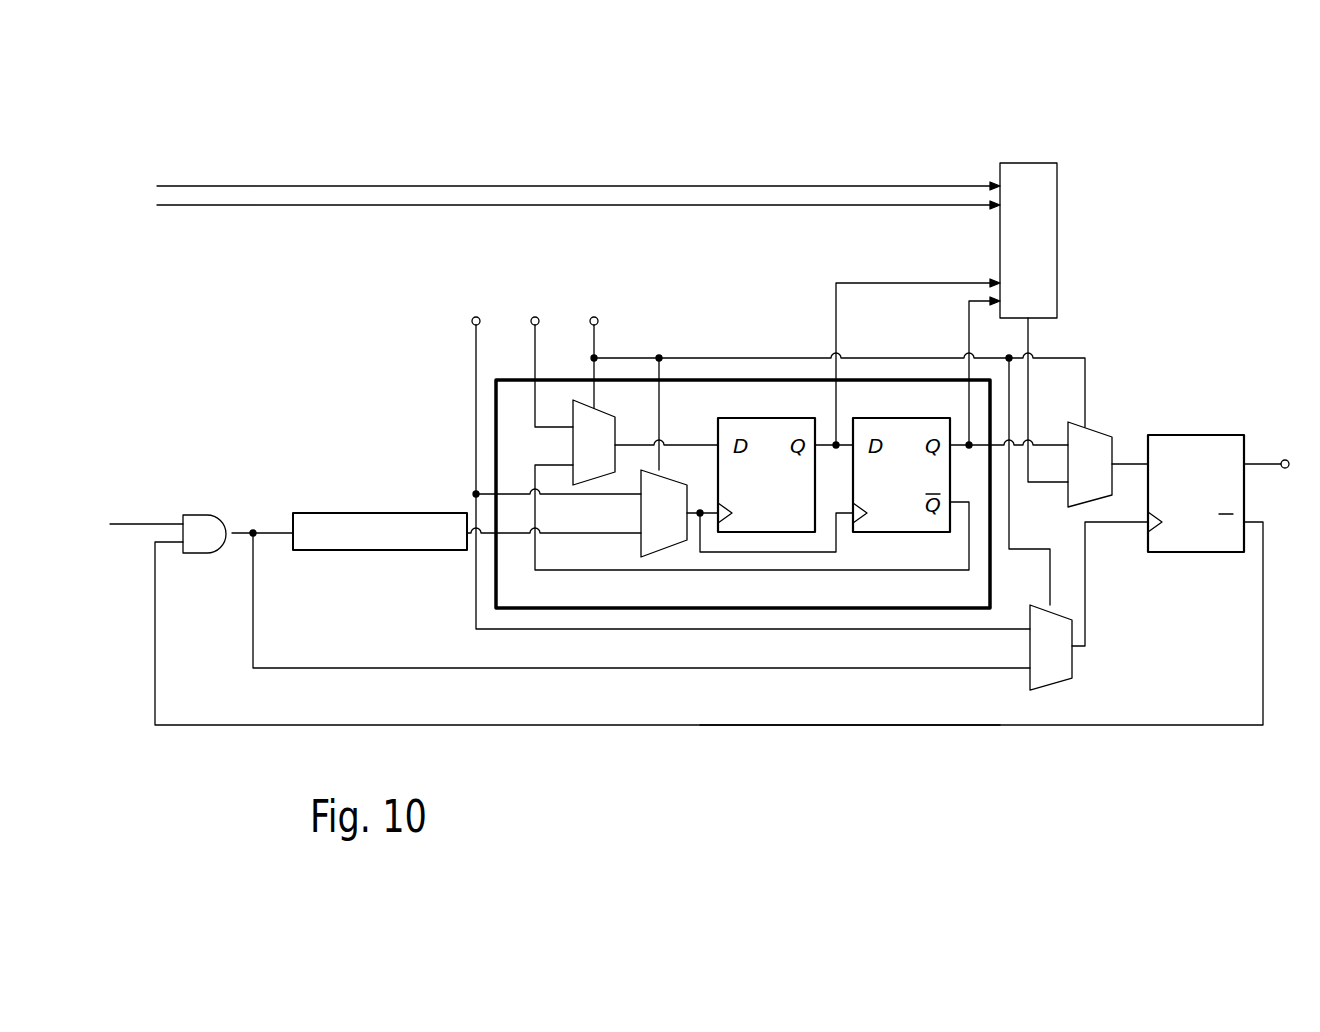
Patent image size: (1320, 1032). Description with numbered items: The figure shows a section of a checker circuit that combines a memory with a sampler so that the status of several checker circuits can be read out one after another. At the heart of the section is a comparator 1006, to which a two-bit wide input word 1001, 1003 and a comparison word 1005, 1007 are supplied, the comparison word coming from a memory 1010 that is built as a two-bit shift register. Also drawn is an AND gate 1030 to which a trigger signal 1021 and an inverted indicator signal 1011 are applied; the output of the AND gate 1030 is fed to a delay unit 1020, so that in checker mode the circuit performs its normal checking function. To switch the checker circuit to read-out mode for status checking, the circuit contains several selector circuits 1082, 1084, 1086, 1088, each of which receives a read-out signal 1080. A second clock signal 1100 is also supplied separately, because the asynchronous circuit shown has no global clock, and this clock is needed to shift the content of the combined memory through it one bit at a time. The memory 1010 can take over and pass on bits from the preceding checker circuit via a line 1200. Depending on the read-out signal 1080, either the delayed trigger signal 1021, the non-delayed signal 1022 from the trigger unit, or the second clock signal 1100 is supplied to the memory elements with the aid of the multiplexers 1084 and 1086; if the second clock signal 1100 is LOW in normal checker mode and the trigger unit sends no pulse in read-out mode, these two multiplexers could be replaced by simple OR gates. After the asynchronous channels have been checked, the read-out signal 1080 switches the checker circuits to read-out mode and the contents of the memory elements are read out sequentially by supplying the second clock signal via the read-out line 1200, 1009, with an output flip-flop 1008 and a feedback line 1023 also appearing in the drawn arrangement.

The input word 1001 is at (240, 186).
The input word 1003 is at (240, 205).
The comparison word 1005 is at (836, 282).
The comparator 1006 is at (1022, 157).
The comparison word 1007 is at (968, 340).
The D flip-flop 1008 is at (1204, 428).
The read-out line 1009 is at (1262, 462).
The memory 1010 is at (670, 616).
The inverted indicator signal 1011 is at (1191, 727).
The delay unit 1020 is at (332, 505).
The trigger signal 1021 is at (130, 523).
The non-delayed signal 1022 is at (358, 670).
The feedback line 1023 is at (946, 727).
The AND gate 1030 is at (197, 508).
The read-out signal 1080 is at (598, 332).
The selector circuit 1082 is at (560, 443).
The multiplexer 1084 is at (634, 517).
The multiplexer 1086 is at (1064, 685).
The fourth multiplexer 1088 is at (1104, 424).
The second clock signal 1100 is at (476, 347).
The line 1200 is at (533, 338).